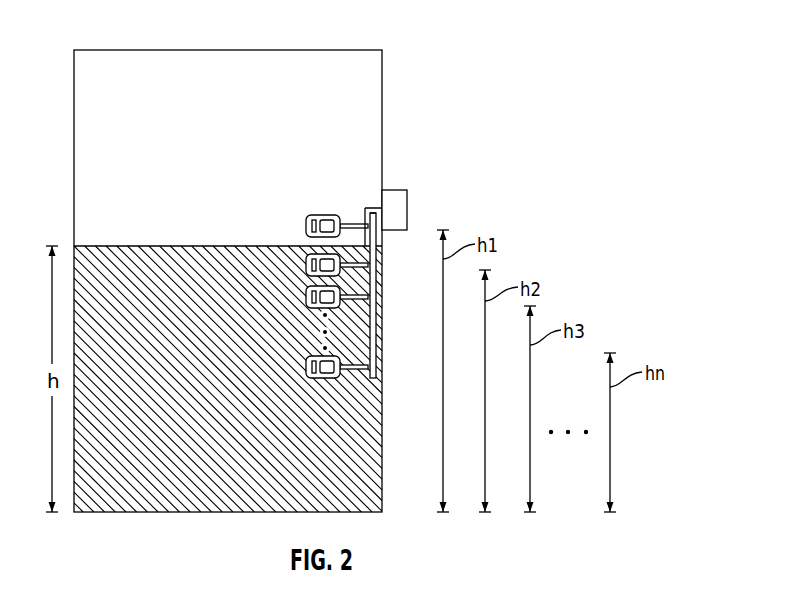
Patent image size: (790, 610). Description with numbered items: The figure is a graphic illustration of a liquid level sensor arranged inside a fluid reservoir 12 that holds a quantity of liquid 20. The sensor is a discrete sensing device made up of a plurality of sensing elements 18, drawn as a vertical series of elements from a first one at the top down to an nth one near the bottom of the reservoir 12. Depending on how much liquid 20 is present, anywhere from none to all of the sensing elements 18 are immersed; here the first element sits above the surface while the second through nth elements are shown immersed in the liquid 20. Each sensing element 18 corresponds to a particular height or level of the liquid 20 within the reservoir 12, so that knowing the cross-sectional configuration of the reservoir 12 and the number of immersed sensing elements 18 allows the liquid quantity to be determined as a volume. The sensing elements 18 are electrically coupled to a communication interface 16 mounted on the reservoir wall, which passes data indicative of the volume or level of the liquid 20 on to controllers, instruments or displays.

The fluid reservoir 12 is at (111, 50).
The liquid 20 is at (150, 246).
The sensing elements 18 is at (277, 385).
The communication interface 16 is at (393, 190).